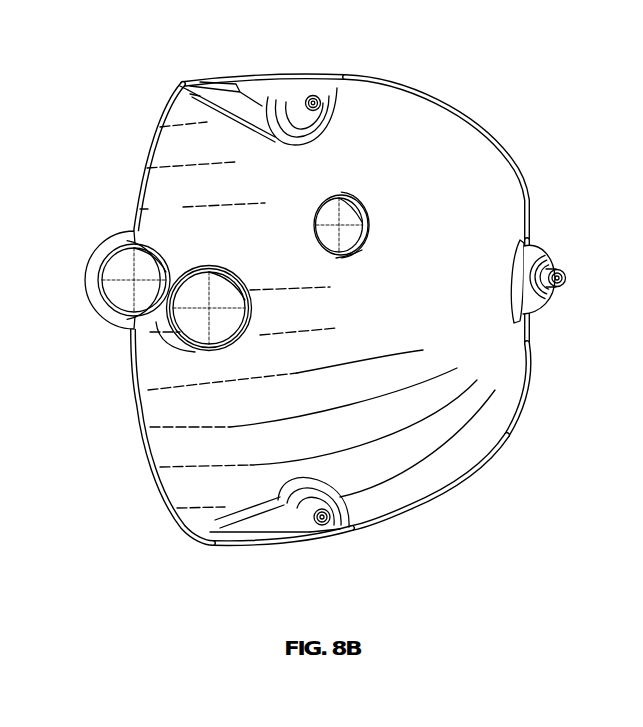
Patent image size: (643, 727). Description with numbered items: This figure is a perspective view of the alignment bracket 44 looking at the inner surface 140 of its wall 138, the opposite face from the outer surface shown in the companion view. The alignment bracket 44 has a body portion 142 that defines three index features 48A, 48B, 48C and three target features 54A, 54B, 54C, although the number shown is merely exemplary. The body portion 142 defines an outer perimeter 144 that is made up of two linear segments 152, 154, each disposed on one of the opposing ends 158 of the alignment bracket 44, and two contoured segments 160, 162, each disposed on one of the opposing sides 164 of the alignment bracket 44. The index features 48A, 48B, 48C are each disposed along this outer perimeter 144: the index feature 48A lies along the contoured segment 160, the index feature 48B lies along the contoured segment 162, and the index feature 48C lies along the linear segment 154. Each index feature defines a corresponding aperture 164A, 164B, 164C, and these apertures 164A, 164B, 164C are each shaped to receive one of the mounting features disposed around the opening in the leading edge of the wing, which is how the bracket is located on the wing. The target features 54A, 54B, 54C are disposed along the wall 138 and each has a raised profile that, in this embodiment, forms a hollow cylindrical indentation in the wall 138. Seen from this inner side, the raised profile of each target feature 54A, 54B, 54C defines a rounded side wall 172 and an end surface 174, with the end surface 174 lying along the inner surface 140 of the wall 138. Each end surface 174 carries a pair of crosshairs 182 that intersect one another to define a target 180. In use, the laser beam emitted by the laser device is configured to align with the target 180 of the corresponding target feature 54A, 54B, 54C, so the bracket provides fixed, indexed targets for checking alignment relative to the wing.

The alignment bracket 44 is at (490, 497).
The index feature 48A is at (325, 104).
The index feature 48B is at (307, 527).
The index feature 48C is at (548, 264).
The target feature 54A is at (251, 296).
The target feature 54B is at (187, 262).
The target feature 54C is at (377, 223).
The wall 138 is at (523, 343).
The inner surface 140 is at (341, 446).
The body portion 142 is at (450, 204).
The outer perimeter 144 is at (471, 125).
The linear segment 152 is at (140, 412).
The linear segment 154 is at (528, 220).
The opposing ends 158 is at (555, 413).
The contoured segment 160 is at (399, 88).
The contoured segment 162 is at (393, 523).
The opposing sides 164 is at (449, 64).
The aperture 164A is at (336, 92).
The aperture 164B is at (347, 523).
The aperture 164C is at (560, 281).
The rounded side wall 172 is at (357, 208).
The end surface 174 is at (112, 297).
The target 180 is at (165, 245).
The crosshairs 182 is at (112, 264).